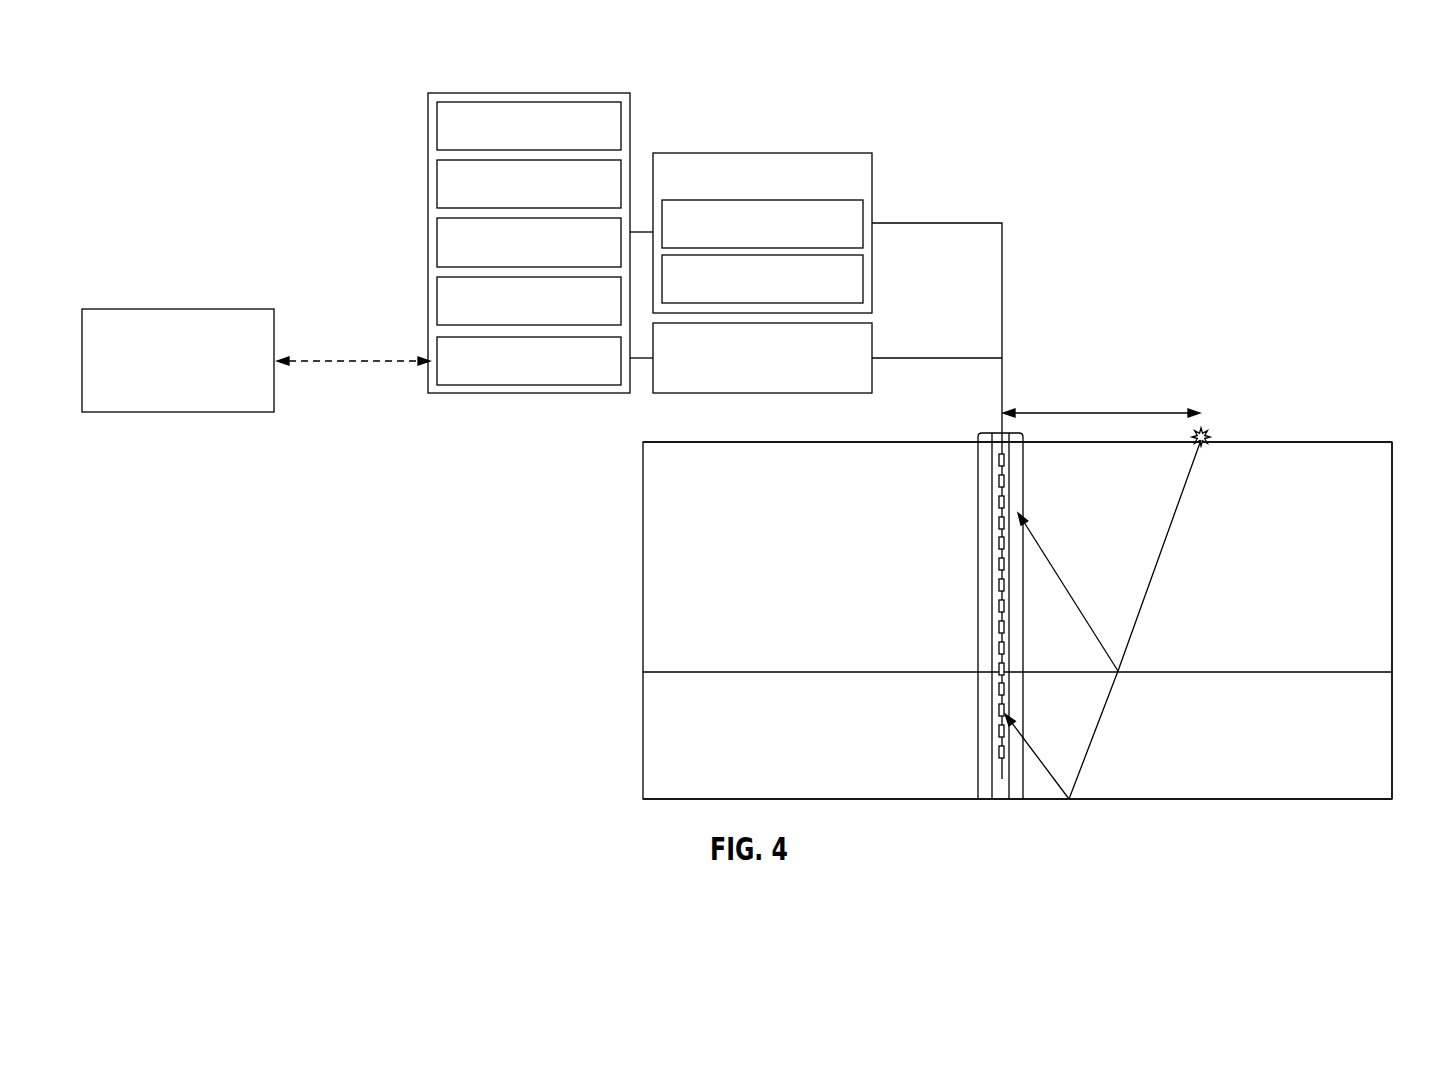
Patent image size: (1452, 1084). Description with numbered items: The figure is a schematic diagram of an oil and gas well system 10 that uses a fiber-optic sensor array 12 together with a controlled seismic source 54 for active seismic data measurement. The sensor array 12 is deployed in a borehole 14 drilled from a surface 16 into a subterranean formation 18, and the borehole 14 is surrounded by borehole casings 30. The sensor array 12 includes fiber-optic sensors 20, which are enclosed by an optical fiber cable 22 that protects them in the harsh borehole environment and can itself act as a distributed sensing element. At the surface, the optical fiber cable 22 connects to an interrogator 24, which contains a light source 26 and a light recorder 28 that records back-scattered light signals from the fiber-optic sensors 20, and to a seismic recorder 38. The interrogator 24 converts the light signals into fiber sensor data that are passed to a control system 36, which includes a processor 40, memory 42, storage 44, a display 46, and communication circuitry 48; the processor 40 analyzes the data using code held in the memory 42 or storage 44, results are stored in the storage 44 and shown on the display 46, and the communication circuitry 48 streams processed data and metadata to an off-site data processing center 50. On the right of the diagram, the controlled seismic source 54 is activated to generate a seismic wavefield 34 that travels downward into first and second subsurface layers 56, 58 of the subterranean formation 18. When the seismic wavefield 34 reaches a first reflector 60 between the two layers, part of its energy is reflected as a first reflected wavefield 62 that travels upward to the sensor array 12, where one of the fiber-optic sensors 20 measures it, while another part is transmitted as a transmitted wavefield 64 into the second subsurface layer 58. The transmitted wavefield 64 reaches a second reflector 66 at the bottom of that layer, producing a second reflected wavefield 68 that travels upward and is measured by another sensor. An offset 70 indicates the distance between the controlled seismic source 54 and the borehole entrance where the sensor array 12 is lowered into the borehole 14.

The oil and gas well system 10 is at (1268, 98).
The sensor array 12 is at (916, 685).
The borehole 14 is at (993, 495).
The surface 16 is at (1340, 442).
The subterranean formation 18 is at (1383, 468).
The fiber-optic sensors 20 is at (998, 625).
The optical fiber cable 22 is at (994, 447).
The interrogator 24 is at (872, 185).
The light source 26 is at (863, 238).
The light recorder 28 is at (863, 282).
The borehole casings 30 is at (979, 573).
The seismic wavefield 34 is at (1160, 556).
The control system 36 is at (492, 393).
The seismic recorder 38 is at (817, 394).
The processor 40 is at (436, 127).
The memory 42 is at (436, 185).
The storage 44 is at (436, 243).
The display 46 is at (436, 301).
The communication circuitry 48 is at (436, 348).
The data processing center 50 is at (178, 412).
The controlled seismic source 54 is at (1209, 425).
The first subsurface layer 56 is at (1383, 552).
The second subsurface layer 58 is at (1383, 695).
The first reflector 60 is at (1378, 670).
The first reflected wavefield 62 is at (1053, 567).
The transmitted wavefield 64 is at (1091, 738).
The second reflector 66 is at (1378, 798).
The second reflected wavefield 68 is at (1027, 743).
The offset 70 is at (1081, 410).